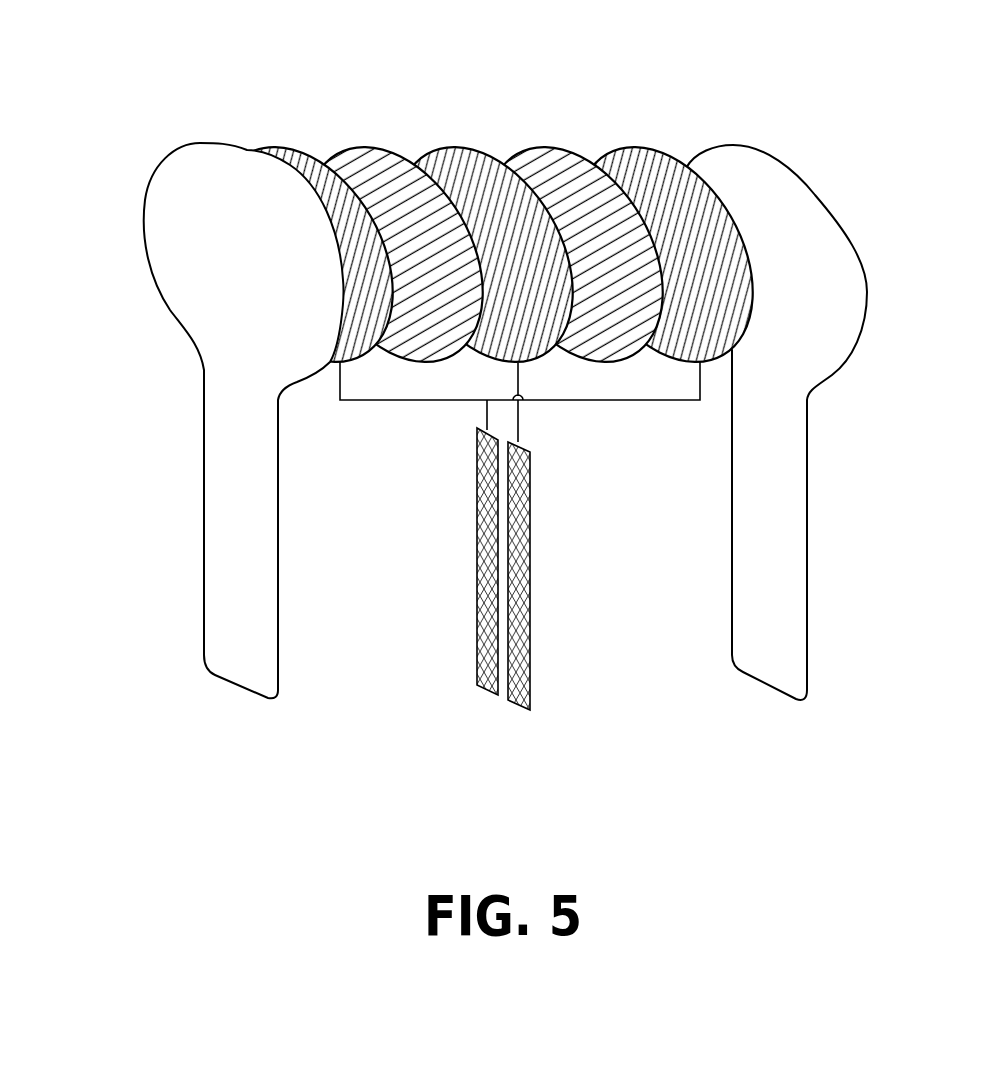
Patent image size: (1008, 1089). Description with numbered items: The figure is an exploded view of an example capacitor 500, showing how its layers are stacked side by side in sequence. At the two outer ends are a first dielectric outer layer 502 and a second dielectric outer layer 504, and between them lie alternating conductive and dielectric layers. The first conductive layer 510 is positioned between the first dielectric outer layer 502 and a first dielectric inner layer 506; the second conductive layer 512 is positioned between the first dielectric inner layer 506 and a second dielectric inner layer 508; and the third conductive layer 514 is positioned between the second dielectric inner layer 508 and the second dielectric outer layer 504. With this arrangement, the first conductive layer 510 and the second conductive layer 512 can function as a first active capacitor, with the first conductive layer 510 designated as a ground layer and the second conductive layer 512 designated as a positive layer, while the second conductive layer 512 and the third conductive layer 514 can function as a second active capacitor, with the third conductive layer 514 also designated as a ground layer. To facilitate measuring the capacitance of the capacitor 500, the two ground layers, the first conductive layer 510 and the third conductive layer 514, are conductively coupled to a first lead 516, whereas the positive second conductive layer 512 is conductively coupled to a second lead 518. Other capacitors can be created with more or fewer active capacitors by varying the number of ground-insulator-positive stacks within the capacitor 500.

The capacitor 500 is at (80, 53).
The first dielectric outer layer 502 is at (186, 143).
The second dielectric outer layer 504 is at (800, 172).
The first dielectric inner layer 506 is at (383, 146).
The second dielectric inner layer 508 is at (563, 146).
The first conductive layer 510 is at (290, 146).
The second conductive layer 512 is at (473, 146).
The third conductive layer 514 is at (660, 150).
The first lead 516 is at (499, 560).
The second lead 518 is at (530, 513).